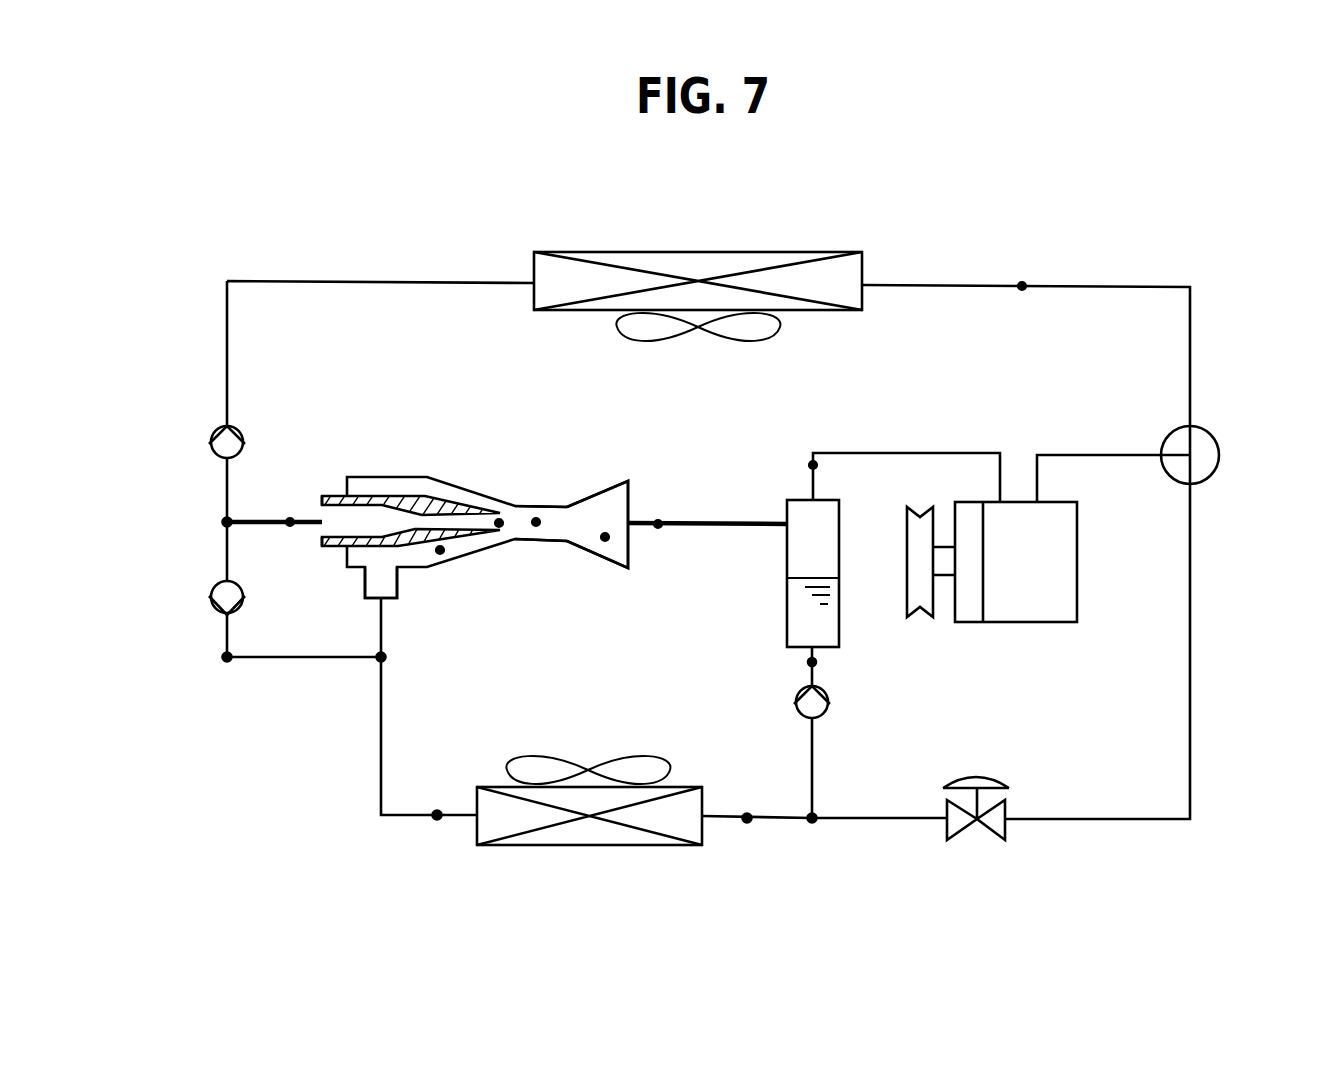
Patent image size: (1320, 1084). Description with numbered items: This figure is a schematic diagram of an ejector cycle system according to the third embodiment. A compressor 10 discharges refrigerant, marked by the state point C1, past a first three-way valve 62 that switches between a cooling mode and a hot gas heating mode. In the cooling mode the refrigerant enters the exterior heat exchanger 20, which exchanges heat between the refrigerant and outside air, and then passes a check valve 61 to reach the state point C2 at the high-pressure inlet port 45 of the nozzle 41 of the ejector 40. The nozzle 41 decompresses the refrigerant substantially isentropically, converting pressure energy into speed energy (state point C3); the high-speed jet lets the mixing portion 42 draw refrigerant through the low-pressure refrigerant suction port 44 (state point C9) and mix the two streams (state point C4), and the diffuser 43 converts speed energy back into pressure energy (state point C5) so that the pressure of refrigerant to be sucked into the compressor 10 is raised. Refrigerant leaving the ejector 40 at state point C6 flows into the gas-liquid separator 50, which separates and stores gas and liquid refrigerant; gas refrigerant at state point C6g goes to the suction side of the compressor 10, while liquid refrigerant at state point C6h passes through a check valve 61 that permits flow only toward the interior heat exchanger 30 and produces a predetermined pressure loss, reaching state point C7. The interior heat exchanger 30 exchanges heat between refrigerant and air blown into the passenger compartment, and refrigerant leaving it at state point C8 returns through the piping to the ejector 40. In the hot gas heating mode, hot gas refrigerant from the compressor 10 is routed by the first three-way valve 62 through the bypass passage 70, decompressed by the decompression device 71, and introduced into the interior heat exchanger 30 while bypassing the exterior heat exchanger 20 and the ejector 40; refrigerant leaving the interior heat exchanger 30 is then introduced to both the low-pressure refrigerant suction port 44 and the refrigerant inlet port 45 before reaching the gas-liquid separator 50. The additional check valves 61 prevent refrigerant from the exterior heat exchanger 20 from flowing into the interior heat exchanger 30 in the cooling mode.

The compressor 10 is at (1078, 542).
The exterior heat exchanger 20 is at (765, 252).
The interior heat exchanger 30 is at (690, 787).
The ejector 40 is at (465, 486).
The nozzle 41 is at (406, 497).
The mixing portion 42 is at (545, 507).
The diffuser 43 is at (605, 489).
The low-pressure refrigerant suction port 44 is at (375, 591).
The high-pressure inlet port 45 is at (322, 520).
The gas-liquid separator 50 is at (840, 513).
The check valve 61 is at (209, 441).
The first three-way valve 62 is at (1219, 437).
The bypass passage 70 is at (1190, 665).
The decompression device 71 is at (1005, 810).
The refrigerant state point C1 is at (1022, 286).
The refrigerant state point C2 is at (291, 526).
The refrigerant state point C3 is at (499, 526).
The refrigerant state point C4 is at (536, 525).
The refrigerant state point C5 is at (605, 540).
The refrigerant state point C6 is at (658, 528).
The gas refrigerant state point C6g is at (813, 465).
The liquid refrigerant state point C6h is at (816, 662).
The refrigerant state point C7 is at (747, 815).
The refrigerant state point C8 is at (437, 812).
The refrigerant state point C9 is at (441, 552).